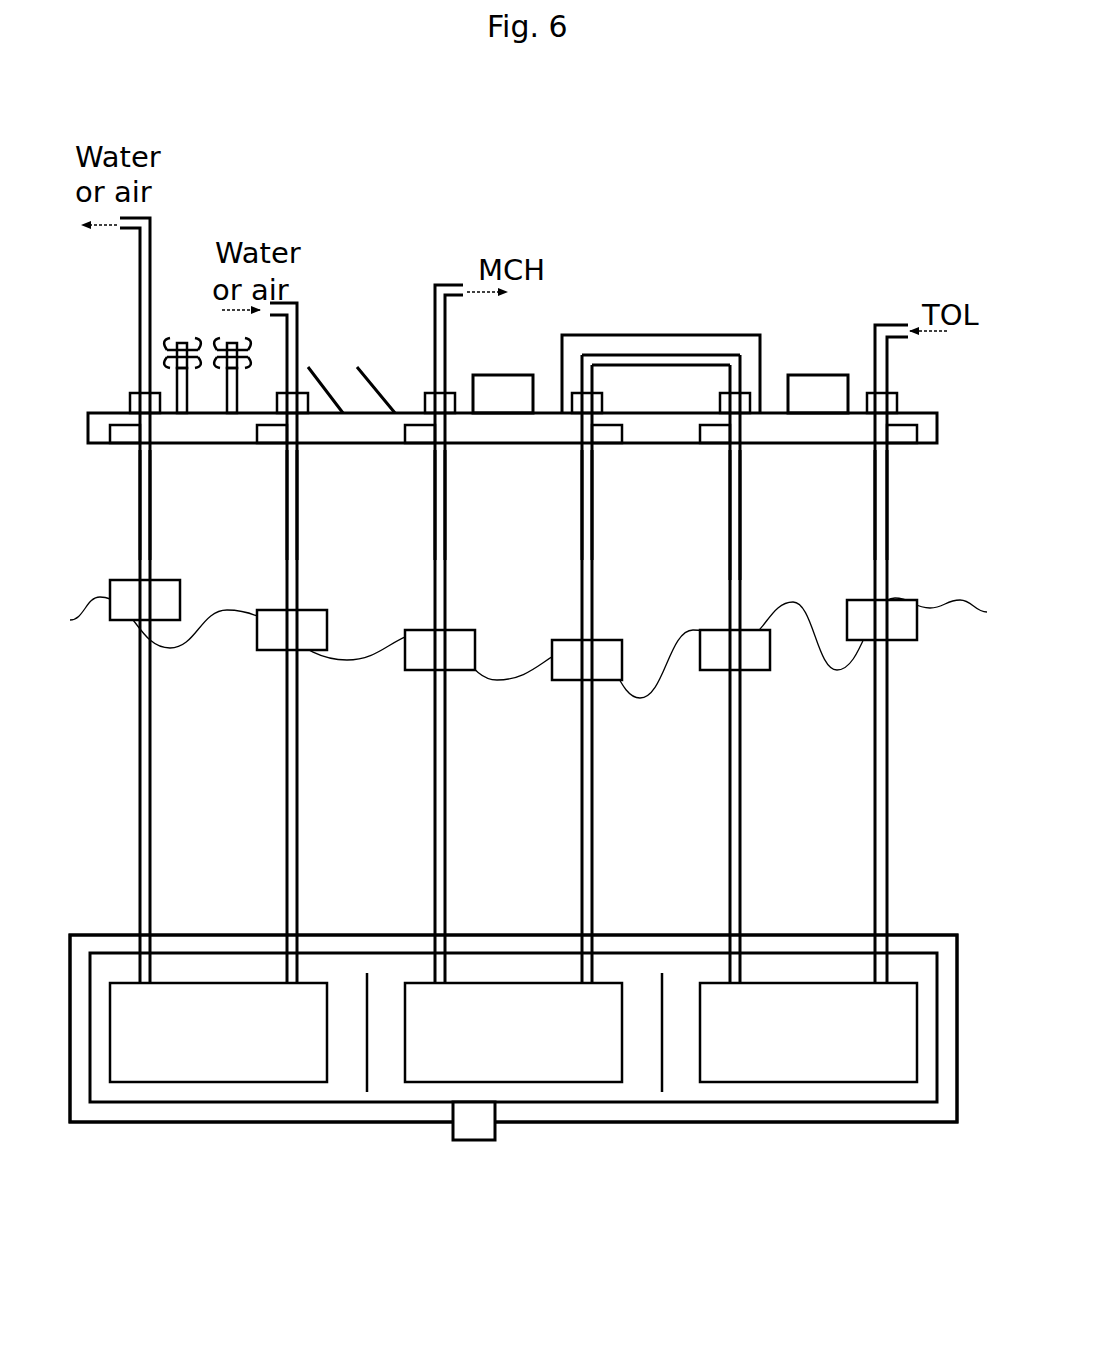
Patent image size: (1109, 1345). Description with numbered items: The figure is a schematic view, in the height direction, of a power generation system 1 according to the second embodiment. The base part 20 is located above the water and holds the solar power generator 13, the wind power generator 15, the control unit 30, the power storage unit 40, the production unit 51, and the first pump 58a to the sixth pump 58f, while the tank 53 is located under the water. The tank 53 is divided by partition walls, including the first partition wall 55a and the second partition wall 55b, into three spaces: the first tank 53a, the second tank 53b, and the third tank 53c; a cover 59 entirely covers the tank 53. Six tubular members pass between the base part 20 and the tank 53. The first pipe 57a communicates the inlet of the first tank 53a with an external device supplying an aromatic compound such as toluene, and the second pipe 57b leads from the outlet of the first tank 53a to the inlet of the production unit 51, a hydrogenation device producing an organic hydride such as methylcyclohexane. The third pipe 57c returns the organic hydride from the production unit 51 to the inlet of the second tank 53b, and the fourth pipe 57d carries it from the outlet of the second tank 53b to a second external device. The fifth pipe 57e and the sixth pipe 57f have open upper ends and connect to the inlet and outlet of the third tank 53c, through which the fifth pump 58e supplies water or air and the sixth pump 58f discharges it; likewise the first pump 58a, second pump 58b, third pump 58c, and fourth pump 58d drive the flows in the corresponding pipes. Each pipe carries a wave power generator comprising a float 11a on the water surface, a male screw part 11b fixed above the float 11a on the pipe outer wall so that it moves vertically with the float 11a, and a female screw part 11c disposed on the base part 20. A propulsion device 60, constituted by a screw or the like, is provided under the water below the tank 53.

The power generation system 1 is at (868, 135).
The float 11a is at (182, 580).
The male screw part 11b is at (140, 540).
The female screw part 11c is at (135, 393).
The solar power generator 13 is at (358, 340).
The wind power generator 15 is at (178, 323).
The base part 20 is at (938, 446).
The control unit 30 is at (525, 375).
The power storage unit 40 is at (830, 375).
The production unit 51 is at (740, 335).
The tank 53 is at (915, 953).
The first tank 53a is at (878, 1082).
The second tank 53b is at (562, 1082).
The third tank 53c is at (248, 1082).
The first partition wall 55a is at (662, 1093).
The second partition wall 55b is at (367, 1093).
The first pipe 57a is at (887, 700).
The second pipe 57b is at (740, 730).
The third pipe 57c is at (592, 765).
The fourth pipe 57d is at (445, 750).
The fifth pipe 57e is at (297, 770).
The sixth pipe 57f is at (150, 765).
The first pump 58a is at (897, 443).
The second pump 58b is at (718, 443).
The third pump 58c is at (612, 443).
The fourth pump 58d is at (420, 443).
The fifth pump 58e is at (272, 443).
The sixth pump 58f is at (125, 443).
The cover 59 is at (800, 933).
The propulsion device 60 is at (485, 1140).